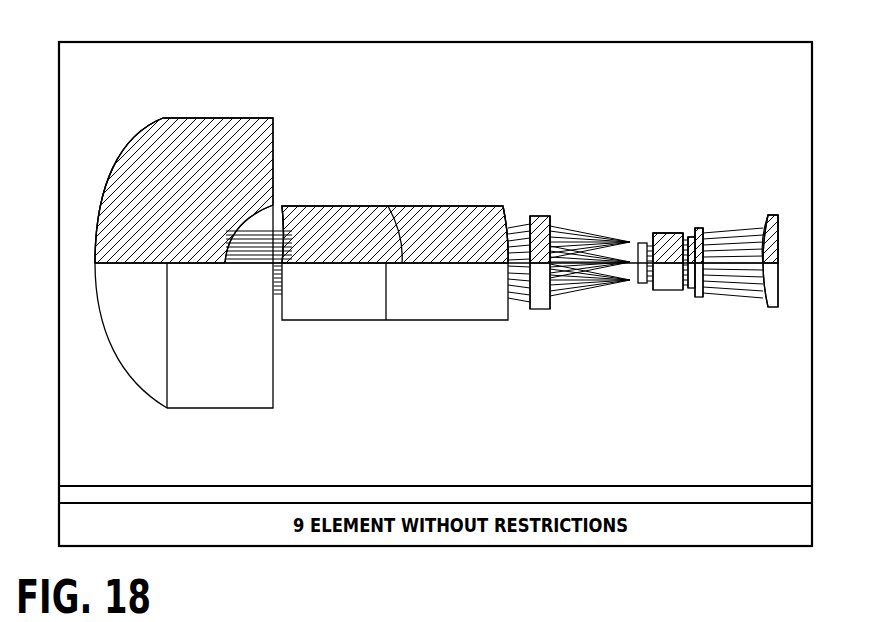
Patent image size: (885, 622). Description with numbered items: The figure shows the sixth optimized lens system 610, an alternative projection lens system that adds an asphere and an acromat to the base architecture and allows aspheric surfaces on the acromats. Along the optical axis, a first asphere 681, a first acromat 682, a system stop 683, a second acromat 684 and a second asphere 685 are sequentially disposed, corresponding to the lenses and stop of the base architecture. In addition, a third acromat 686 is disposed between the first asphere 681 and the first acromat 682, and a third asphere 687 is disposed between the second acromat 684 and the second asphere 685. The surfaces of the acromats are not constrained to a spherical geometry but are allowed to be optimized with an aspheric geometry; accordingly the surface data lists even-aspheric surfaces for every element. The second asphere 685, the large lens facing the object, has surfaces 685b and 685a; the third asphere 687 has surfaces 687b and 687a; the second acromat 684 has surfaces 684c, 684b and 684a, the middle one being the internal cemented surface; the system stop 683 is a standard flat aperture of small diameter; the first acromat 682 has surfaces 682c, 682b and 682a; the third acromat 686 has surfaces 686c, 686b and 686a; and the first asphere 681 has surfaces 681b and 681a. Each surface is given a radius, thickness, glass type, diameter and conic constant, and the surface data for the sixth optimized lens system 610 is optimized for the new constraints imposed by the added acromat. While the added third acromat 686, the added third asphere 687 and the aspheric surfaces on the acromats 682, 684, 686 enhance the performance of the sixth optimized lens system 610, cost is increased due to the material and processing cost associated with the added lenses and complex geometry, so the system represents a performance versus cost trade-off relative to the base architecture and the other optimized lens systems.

The sixth optimized lens system 610 is at (758, 80).
The first asphere 681 is at (761, 271).
The surface of first asphere 681a is at (779, 216).
The surface of first asphere 681b is at (762, 222).
The first acromat 682 is at (626, 256).
The surface of first acromat 682a is at (658, 232).
The surface of first acromat 682b is at (649, 233).
The surface of first acromat 682c is at (633, 237).
The system stop 683 is at (645, 299).
The second acromat 684 is at (394, 287).
The surface of second acromat 684a is at (498, 220).
The surface of second acromat 684b is at (388, 222).
The surface of second acromat 684c is at (290, 220).
The second asphere 685 is at (184, 273).
The surface of second asphere 685a is at (252, 212).
The surface of second asphere 685b is at (118, 166).
The third acromat 686 is at (678, 260).
The surface of third acromat 686a is at (705, 227).
The surface of third acromat 686b is at (694, 233).
The surface of third acromat 686c is at (688, 232).
The third asphere 687 is at (506, 264).
The surface of third asphere 687a is at (560, 211).
The surface of third asphere 687b is at (526, 216).